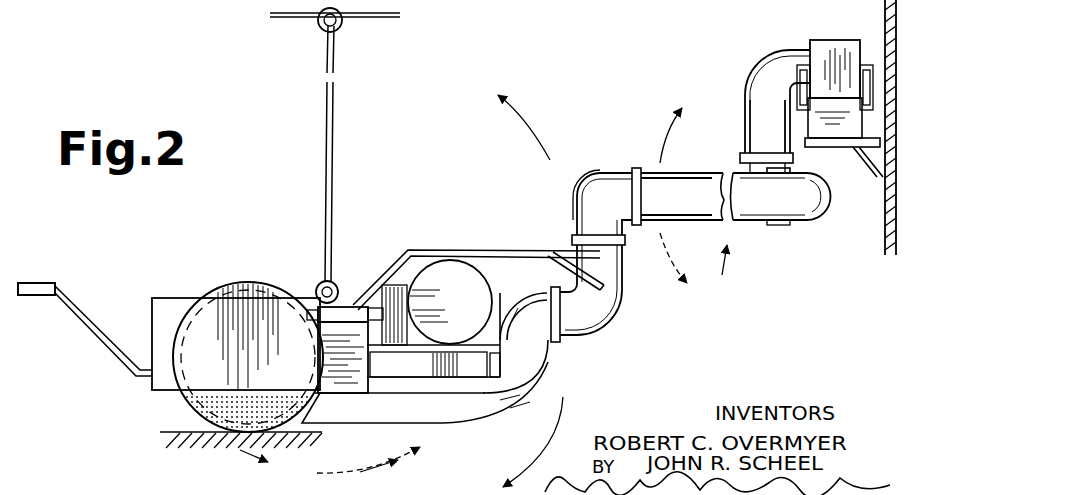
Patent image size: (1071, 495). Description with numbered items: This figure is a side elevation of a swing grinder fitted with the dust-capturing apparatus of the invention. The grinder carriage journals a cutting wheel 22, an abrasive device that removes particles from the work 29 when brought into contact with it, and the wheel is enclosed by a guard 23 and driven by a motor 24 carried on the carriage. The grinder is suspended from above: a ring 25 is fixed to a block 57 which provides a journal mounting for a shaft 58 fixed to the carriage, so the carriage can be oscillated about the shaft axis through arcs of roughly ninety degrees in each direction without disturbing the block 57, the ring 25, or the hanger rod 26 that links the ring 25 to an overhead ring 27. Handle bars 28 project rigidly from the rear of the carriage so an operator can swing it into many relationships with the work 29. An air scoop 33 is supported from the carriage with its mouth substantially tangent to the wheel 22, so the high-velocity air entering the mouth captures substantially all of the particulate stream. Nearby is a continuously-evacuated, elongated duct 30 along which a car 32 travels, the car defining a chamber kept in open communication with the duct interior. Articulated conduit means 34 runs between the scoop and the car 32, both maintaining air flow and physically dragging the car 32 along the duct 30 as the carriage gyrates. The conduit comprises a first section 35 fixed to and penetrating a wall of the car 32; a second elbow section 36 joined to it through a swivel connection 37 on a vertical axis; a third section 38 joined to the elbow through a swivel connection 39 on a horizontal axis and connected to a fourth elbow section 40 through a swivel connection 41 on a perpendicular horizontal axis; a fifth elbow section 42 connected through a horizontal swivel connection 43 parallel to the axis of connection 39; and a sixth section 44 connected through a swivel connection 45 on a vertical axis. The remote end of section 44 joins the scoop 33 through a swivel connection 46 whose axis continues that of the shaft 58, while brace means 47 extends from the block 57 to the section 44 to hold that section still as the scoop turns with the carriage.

The cutting wheel 22 is at (197, 398).
The guard 23 is at (228, 282).
The motor 24 is at (468, 311).
The ring 25 is at (321, 283).
The hanger rod 26 is at (337, 158).
The overhead ring 27 is at (342, 28).
The handle bars 28 is at (72, 292).
The work 29 is at (187, 432).
The duct 30 is at (848, 123).
The car 32 is at (835, 43).
The air scoop 33 is at (412, 410).
The conduit means 34 is at (487, 291).
The first section 35 is at (790, 52).
The second section 36 is at (740, 170).
The swivel connection 37 is at (745, 160).
The third section 38 is at (704, 222).
The swivel connection 39 is at (792, 168).
The fourth elbow section 40 is at (608, 178).
The swivel connection 41 is at (638, 226).
The fifth elbow section 42 is at (575, 220).
The horizontal swivel connection 43 is at (577, 175).
The sixth section 44 is at (613, 310).
The swivel connection 45 is at (570, 237).
The swivel connection 46 is at (555, 342).
The brace means 47 is at (490, 250).
The block 57 is at (347, 312).
The shaft 58 is at (307, 310).